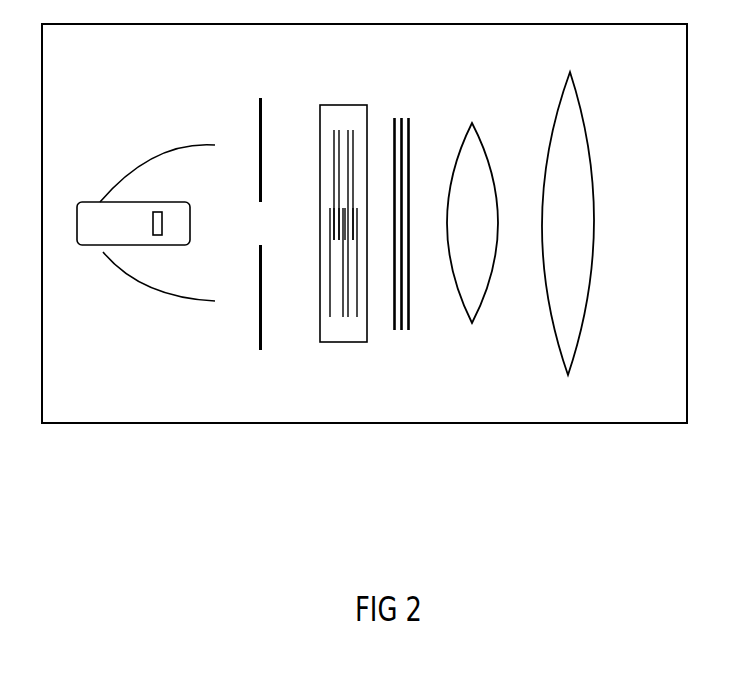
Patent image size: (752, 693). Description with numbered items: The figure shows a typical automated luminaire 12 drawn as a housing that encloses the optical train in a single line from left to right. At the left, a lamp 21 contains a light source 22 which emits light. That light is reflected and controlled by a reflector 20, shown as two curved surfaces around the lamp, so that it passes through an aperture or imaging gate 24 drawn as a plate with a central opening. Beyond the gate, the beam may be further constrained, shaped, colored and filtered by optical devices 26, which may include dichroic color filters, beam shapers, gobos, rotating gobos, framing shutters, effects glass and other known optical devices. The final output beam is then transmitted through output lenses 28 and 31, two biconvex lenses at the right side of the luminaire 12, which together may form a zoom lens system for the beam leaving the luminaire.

The automated luminaire 12 is at (580, 434).
The reflector 20 is at (152, 155).
The lamp 21 is at (130, 233).
The light source 22 is at (162, 220).
The aperture or imaging gate 24 is at (262, 113).
The optical devices 26 is at (350, 107).
The output lens 28 is at (473, 147).
The output lens 31 is at (562, 127).